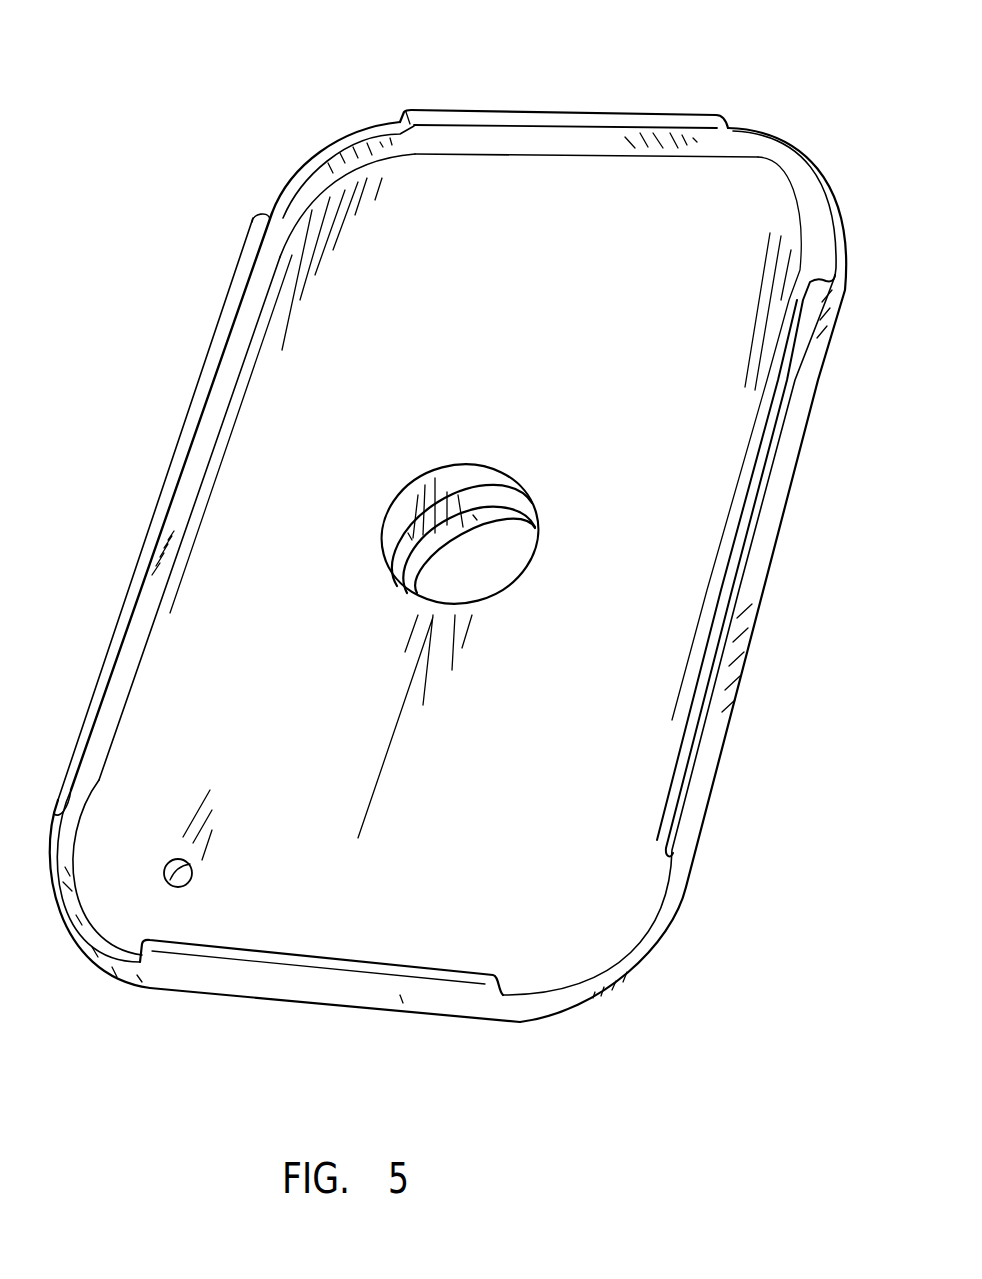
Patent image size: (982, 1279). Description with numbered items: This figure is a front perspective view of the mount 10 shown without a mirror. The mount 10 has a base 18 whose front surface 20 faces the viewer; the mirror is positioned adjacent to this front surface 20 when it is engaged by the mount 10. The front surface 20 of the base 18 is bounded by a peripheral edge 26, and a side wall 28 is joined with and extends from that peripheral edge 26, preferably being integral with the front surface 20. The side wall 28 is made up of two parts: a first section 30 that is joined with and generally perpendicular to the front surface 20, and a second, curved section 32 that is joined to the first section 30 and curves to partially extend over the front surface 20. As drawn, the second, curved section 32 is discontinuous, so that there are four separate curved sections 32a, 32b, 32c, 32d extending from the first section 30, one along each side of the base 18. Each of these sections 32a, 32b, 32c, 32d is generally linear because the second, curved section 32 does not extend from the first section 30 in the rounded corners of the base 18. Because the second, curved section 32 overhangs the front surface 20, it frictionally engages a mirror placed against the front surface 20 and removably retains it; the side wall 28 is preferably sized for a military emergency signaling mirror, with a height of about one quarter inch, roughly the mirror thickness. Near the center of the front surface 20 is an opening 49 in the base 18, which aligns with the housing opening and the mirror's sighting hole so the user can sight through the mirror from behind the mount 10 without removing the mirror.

The mount 10 is at (349, 103).
The base 18 is at (266, 188).
The front surface 20 is at (442, 316).
The peripheral edge 26 is at (758, 157).
The side wall 28 is at (391, 141).
The first section 30 is at (343, 158).
The second, curved section 32 is at (545, 110).
The curved section 32a is at (625, 120).
The curved section 32b is at (738, 588).
The curved section 32c is at (432, 977).
The curved section 32d is at (140, 577).
The opening 49 is at (468, 480).